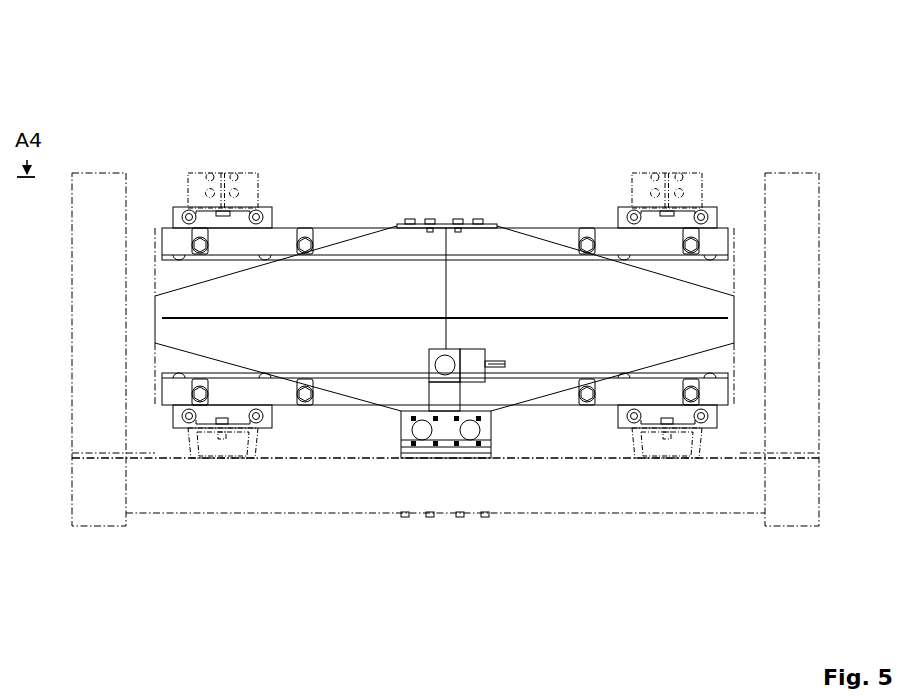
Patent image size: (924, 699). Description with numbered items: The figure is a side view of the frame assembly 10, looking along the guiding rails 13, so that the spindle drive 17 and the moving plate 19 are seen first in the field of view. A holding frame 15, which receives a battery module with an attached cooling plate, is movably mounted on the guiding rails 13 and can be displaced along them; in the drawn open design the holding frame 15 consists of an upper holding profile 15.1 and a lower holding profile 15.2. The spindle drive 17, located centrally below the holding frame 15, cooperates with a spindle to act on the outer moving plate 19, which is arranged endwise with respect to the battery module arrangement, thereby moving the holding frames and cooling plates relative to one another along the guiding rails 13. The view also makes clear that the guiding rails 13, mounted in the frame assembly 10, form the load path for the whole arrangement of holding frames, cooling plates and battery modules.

The frame assembly 10 is at (445, 298).
The guiding rails 13 is at (201, 208).
The holding frame 15 is at (444, 324).
The upper holding profile 15.1 is at (333, 230).
The lower holding profile 15.2 is at (322, 402).
The spindle drive 17 is at (450, 425).
The moving plate 19 is at (484, 265).